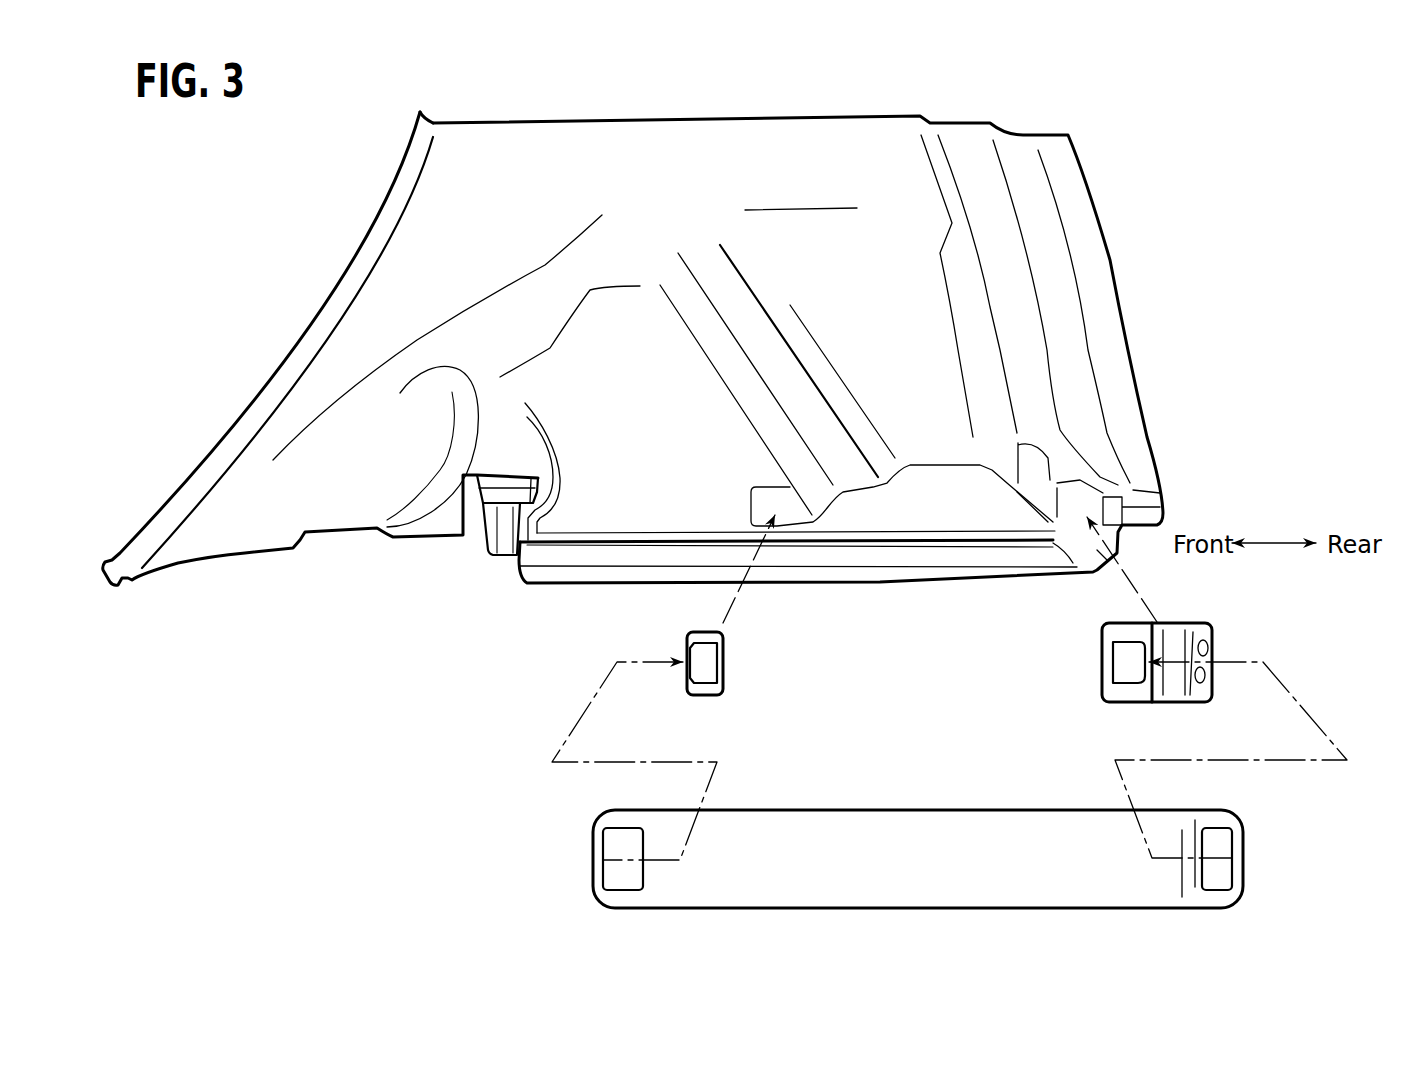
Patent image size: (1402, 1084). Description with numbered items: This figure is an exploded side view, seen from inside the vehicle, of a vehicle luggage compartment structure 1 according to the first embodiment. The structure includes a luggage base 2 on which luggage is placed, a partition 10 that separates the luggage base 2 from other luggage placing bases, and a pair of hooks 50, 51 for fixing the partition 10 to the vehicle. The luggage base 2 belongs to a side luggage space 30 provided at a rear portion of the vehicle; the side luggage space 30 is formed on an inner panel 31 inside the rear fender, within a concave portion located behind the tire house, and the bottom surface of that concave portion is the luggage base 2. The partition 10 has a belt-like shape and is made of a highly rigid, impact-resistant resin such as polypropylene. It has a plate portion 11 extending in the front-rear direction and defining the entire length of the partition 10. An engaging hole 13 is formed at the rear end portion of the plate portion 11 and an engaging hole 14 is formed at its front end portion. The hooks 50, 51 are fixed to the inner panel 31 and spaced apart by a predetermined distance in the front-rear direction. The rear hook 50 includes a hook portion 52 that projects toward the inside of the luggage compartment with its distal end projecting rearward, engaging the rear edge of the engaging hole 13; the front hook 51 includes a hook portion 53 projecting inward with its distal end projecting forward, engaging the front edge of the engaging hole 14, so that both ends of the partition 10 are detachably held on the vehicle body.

The vehicle luggage compartment structure 1 is at (577, 650).
The luggage base 2 is at (997, 513).
The partition 10 is at (925, 797).
The plate portion 11 is at (920, 908).
The engaging hole 13 is at (1212, 876).
The engaging hole 14 is at (608, 876).
The side luggage space 30 is at (897, 375).
The inner panel 31 is at (828, 140).
The rear hook 50 is at (1125, 633).
The front hook 51 is at (722, 637).
The hook portion 52 is at (1128, 670).
The hook portion 53 is at (690, 672).